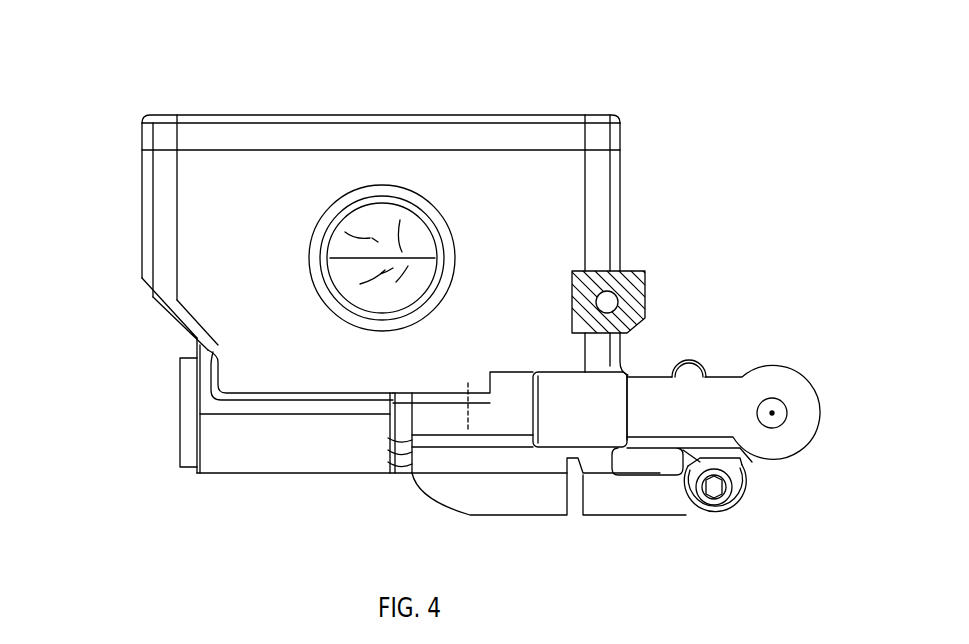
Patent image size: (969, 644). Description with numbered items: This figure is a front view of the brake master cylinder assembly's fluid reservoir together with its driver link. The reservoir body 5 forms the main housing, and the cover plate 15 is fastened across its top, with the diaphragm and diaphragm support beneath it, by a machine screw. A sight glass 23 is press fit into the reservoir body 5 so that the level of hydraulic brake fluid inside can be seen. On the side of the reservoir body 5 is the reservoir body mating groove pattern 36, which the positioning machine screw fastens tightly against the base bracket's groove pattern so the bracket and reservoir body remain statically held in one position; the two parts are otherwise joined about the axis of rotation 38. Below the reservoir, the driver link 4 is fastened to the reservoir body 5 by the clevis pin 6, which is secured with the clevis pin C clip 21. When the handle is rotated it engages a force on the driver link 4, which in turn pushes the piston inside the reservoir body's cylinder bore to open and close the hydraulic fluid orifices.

The cover plate 15 is at (456, 113).
The sight glass 23 is at (368, 259).
The reservoir body 5 is at (623, 183).
The reservoir body mating groove pattern 36 is at (639, 268).
The driver link 4 is at (708, 356).
The axis of rotation 38 is at (775, 412).
The clevis pin 6 is at (727, 491).
The clevis pin C clip 21 is at (686, 511).